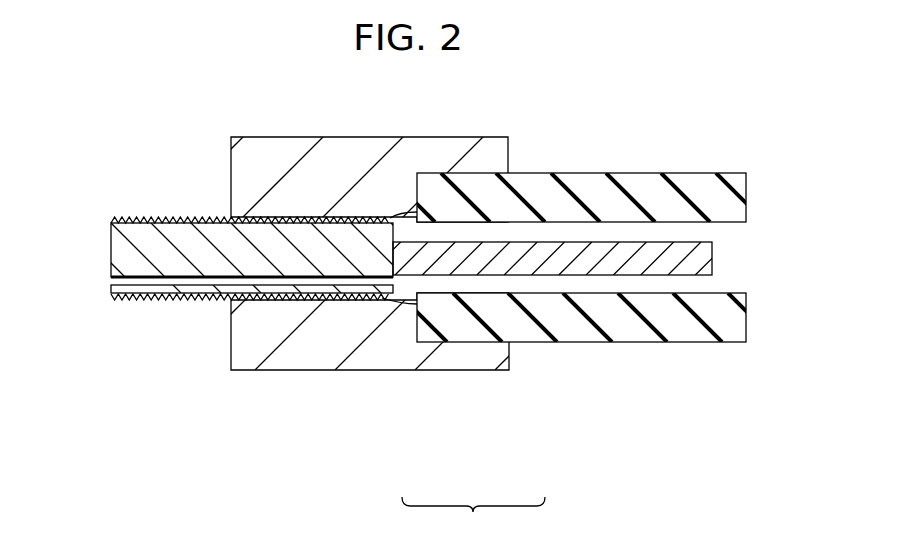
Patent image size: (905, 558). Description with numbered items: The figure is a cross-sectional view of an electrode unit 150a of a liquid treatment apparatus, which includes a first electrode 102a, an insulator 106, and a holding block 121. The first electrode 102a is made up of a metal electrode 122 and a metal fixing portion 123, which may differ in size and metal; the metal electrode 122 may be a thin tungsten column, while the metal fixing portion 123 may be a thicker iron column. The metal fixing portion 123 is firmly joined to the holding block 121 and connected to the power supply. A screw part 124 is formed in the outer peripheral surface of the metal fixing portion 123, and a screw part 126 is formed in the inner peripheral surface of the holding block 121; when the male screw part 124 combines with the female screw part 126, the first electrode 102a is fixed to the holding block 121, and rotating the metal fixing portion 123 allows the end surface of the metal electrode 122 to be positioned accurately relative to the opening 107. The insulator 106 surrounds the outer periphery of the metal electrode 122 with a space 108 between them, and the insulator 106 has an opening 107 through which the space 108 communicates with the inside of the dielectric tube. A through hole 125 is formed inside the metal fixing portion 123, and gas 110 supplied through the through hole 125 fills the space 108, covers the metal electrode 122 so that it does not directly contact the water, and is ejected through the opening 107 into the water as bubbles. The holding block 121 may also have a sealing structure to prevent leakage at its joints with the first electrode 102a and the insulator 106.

The electrode unit 150a is at (190, 86).
The gas 110 is at (86, 284).
The holding block 121 is at (278, 372).
The metal fixing portion 123 is at (335, 268).
The through hole 125 is at (148, 283).
The metal electrode 122 is at (582, 268).
The insulator 106 is at (698, 182).
The space 108 is at (558, 232).
The opening 107 is at (764, 246).
The screw part 126 is at (286, 220).
The screw part 124 is at (332, 218).
The first electrode 102a is at (473, 517).